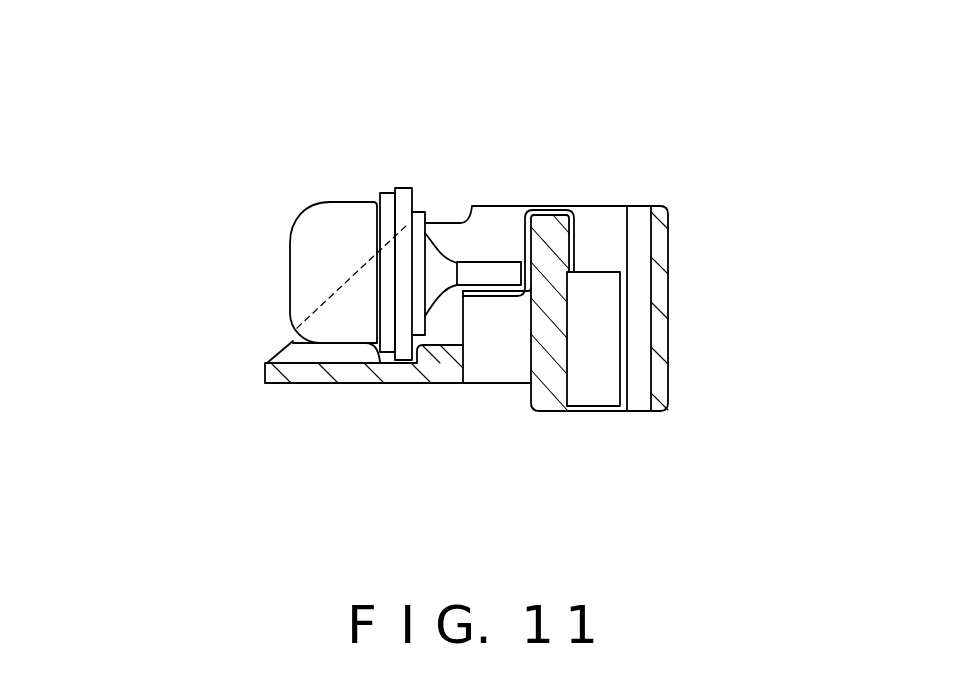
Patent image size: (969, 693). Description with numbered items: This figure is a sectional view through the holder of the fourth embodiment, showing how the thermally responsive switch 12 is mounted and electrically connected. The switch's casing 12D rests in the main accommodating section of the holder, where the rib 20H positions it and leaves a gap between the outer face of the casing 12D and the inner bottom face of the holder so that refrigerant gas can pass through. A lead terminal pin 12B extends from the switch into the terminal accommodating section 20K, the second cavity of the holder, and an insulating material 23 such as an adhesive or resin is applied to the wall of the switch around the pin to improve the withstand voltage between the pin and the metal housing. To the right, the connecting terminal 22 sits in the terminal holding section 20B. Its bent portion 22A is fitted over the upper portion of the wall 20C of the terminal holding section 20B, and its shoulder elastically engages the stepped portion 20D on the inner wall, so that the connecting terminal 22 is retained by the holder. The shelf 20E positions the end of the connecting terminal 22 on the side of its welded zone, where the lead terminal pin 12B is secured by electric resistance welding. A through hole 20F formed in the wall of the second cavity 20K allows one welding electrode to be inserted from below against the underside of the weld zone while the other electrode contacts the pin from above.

The thermally responsive switch 12 is at (317, 226).
The casing 12D is at (300, 283).
The lead terminal pin 12B is at (490, 283).
The insulating material 23 is at (441, 267).
The terminal accommodating section 20K is at (477, 245).
The bent portion 22A is at (541, 206).
The through hole 20F is at (527, 350).
The wall 20C is at (577, 238).
The connecting terminal 22 is at (587, 347).
The stepped portion 20D is at (570, 277).
The terminal holding section 20B is at (645, 258).
The shelf 20E is at (490, 332).
The rib 20H is at (305, 353).